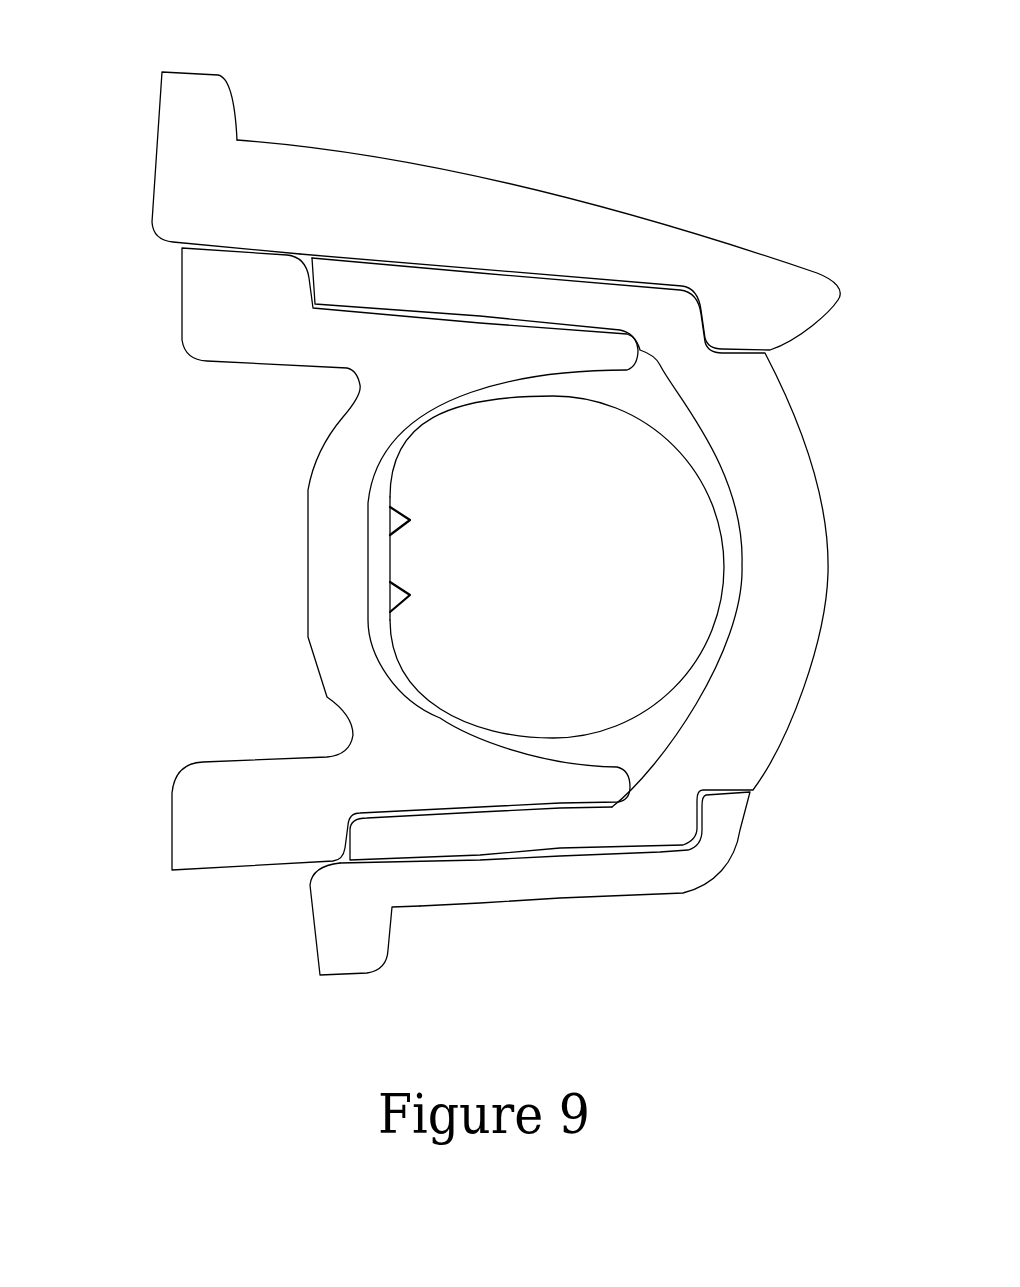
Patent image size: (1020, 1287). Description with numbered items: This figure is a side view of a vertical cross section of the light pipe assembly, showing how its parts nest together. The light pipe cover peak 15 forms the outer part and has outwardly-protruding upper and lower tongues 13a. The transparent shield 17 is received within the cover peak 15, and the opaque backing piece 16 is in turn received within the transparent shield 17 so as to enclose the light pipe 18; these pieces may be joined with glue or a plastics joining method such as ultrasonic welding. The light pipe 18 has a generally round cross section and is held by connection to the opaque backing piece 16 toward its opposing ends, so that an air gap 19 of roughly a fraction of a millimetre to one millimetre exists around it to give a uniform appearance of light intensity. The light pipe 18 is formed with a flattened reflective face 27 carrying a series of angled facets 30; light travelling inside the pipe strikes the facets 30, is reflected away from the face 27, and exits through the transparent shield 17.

The tongues 13a is at (198, 110).
The light pipe cover peak 15 is at (428, 220).
The opaque backing piece 16 is at (338, 520).
The transparent shield 17 is at (785, 622).
The light pipe 18 is at (547, 588).
The air gap 19 is at (650, 402).
The reflective face 27 is at (388, 563).
The angled facets 30 is at (391, 582).